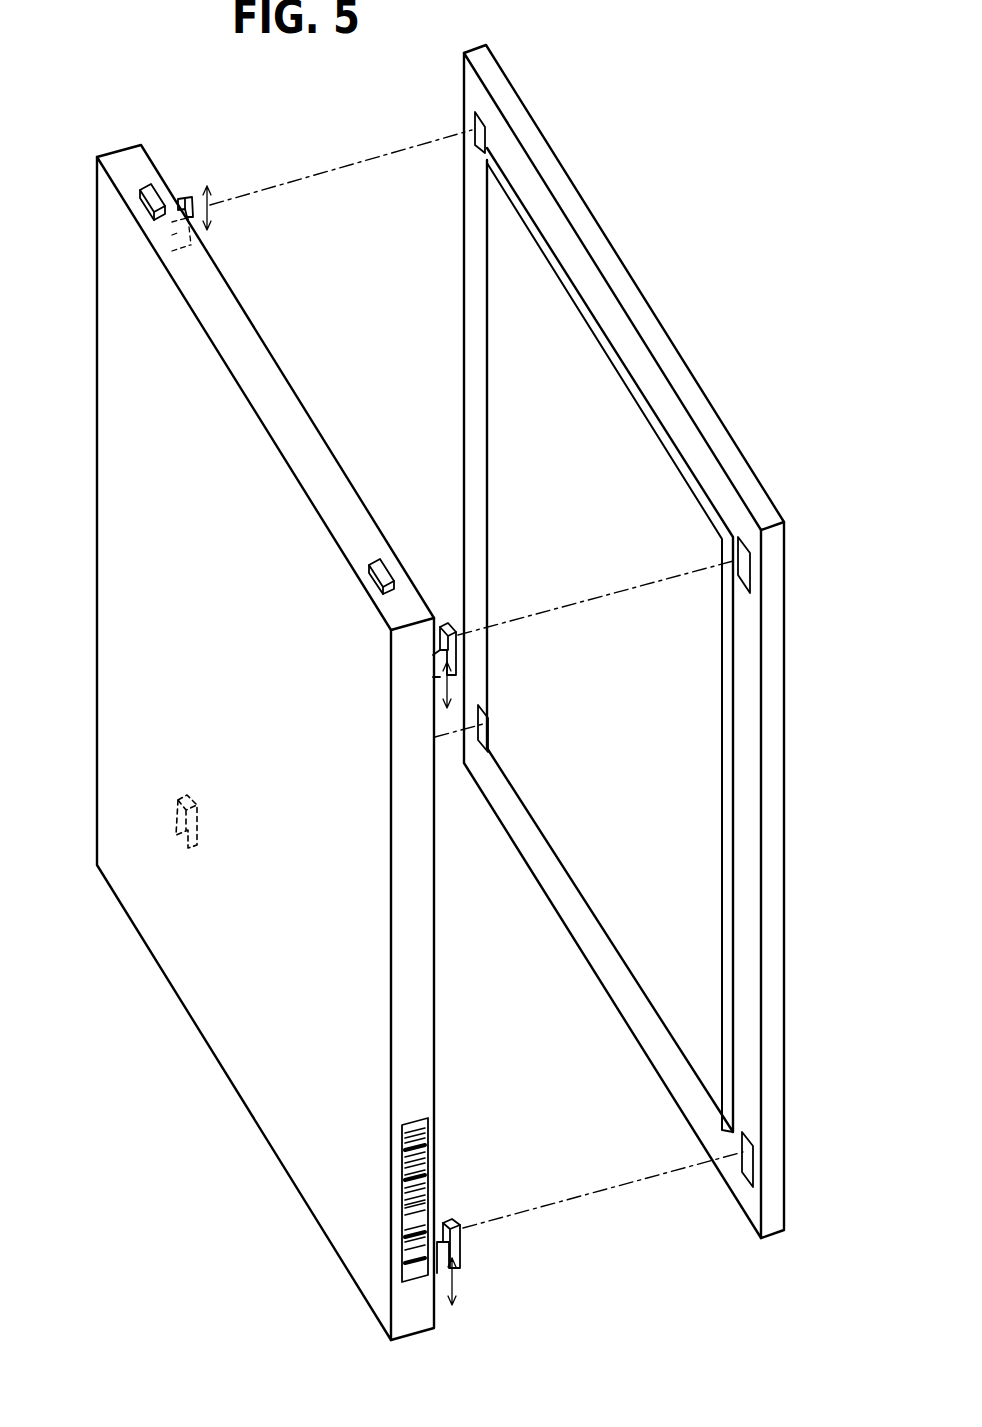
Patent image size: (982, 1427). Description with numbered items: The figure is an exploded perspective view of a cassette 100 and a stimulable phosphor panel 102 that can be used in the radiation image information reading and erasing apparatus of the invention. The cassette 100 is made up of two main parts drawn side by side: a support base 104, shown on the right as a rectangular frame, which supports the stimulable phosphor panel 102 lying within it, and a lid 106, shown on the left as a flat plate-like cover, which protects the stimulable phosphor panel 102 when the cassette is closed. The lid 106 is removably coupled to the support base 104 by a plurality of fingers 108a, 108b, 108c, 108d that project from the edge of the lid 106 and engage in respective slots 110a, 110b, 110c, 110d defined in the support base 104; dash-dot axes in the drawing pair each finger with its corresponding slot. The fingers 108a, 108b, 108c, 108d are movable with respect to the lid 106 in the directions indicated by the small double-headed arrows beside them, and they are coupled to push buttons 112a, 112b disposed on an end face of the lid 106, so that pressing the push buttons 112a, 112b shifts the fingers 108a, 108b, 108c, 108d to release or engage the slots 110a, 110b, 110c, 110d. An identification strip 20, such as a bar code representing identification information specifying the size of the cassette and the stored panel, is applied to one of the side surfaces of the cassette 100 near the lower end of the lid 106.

The cassette 100 is at (283, 1203).
The identification strip 20 is at (403, 1210).
The stimulable phosphor panel 102 is at (707, 752).
The support base 104 is at (748, 830).
The lid 106 is at (240, 1065).
The finger 108a is at (183, 198).
The finger 108b is at (443, 625).
The finger 108c is at (187, 793).
The finger 108d is at (447, 1222).
The slot 110a is at (473, 122).
The slot 110b is at (750, 587).
The slot 110c is at (490, 748).
The slot 110d is at (750, 1177).
The push button 112a is at (141, 186).
The push button 112b is at (370, 578).